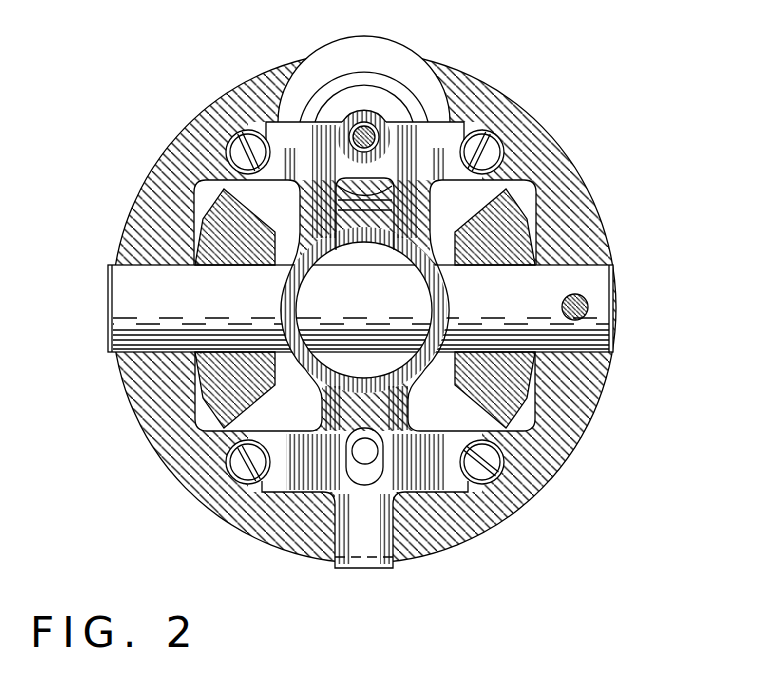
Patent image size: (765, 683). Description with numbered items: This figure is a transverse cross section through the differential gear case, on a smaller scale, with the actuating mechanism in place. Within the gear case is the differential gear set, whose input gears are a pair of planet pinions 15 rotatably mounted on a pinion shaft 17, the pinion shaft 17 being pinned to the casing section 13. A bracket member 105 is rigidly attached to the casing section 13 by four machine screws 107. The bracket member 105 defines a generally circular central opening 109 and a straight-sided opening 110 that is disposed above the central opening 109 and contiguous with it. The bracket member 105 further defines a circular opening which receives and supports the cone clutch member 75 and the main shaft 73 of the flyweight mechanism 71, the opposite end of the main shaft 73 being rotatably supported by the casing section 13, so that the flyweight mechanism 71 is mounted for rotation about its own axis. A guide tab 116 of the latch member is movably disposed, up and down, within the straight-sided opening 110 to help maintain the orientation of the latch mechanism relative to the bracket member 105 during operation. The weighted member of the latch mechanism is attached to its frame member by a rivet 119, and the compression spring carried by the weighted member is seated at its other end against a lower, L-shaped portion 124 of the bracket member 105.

The casing section 13 is at (233, 103).
The flyweight mechanism 71 is at (418, 92).
The main shaft 73 is at (380, 134).
The cone clutch member 75 is at (346, 143).
The machine screws 107 is at (490, 152).
The planet pinions 15 is at (517, 243).
The pinion shaft 17 is at (600, 320).
The bracket member 105 is at (316, 238).
The central opening 109 is at (435, 297).
The straight-sided opening 110 is at (394, 222).
The guide tab 116 is at (357, 203).
The rivet 119 is at (366, 450).
The L-shaped portion 124 is at (373, 569).